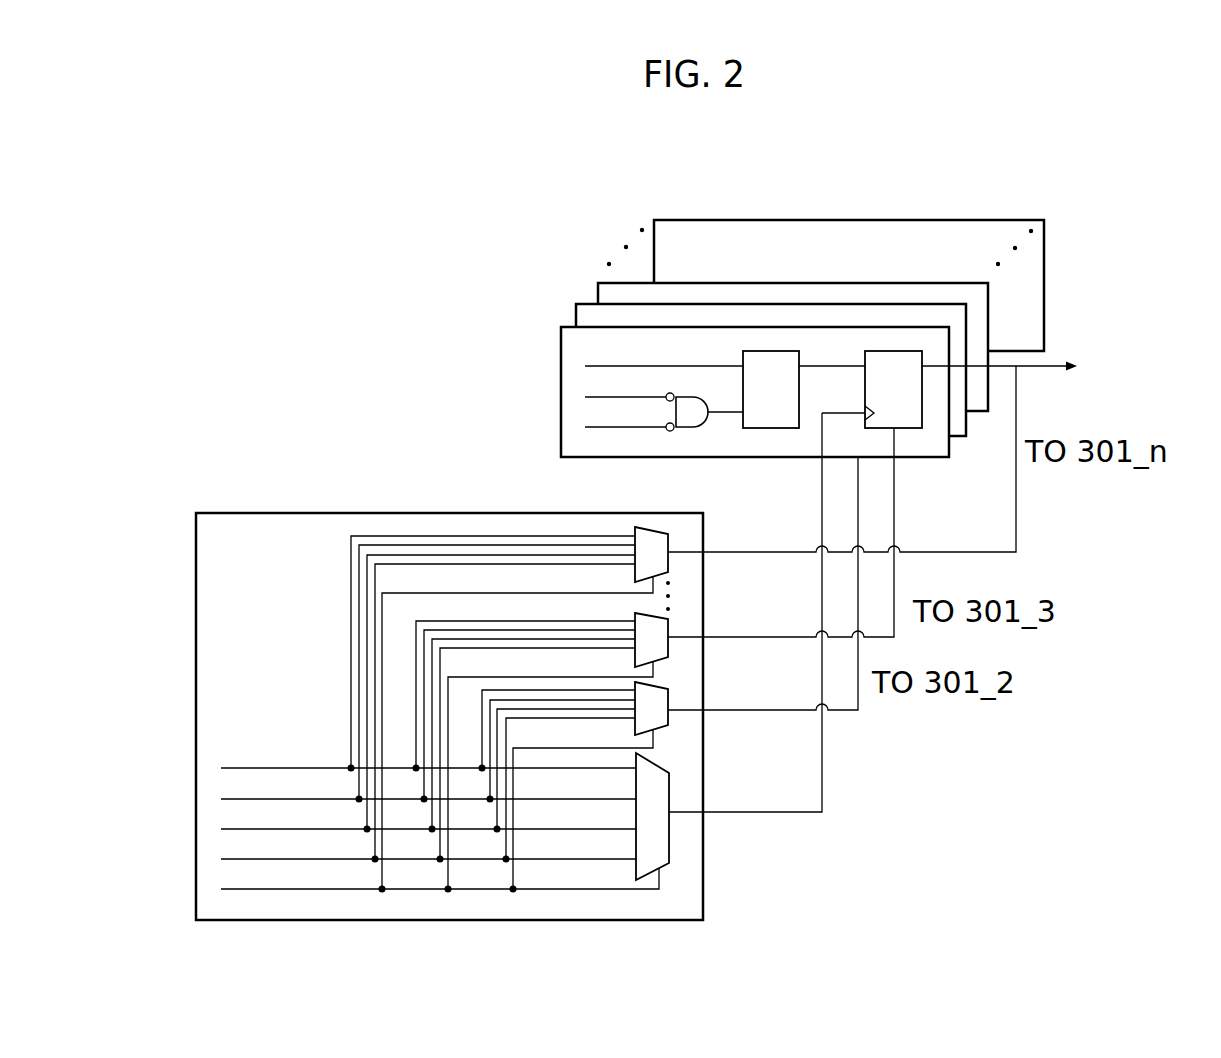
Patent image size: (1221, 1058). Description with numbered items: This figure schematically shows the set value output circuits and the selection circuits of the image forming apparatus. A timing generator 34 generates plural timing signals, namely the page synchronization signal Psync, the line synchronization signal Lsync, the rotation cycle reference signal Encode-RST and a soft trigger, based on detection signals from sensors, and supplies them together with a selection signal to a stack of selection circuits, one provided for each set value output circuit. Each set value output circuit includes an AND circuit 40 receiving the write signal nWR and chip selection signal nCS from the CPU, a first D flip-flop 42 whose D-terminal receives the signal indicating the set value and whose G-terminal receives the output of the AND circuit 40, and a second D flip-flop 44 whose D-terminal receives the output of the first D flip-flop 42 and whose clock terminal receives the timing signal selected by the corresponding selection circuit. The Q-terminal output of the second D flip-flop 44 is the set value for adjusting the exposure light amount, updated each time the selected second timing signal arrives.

The timing generator 34 is at (240, 513).
The AND circuit 40 is at (693, 427).
The first D flip-flop 42 is at (783, 415).
The second D flip-flop 44 is at (898, 417).